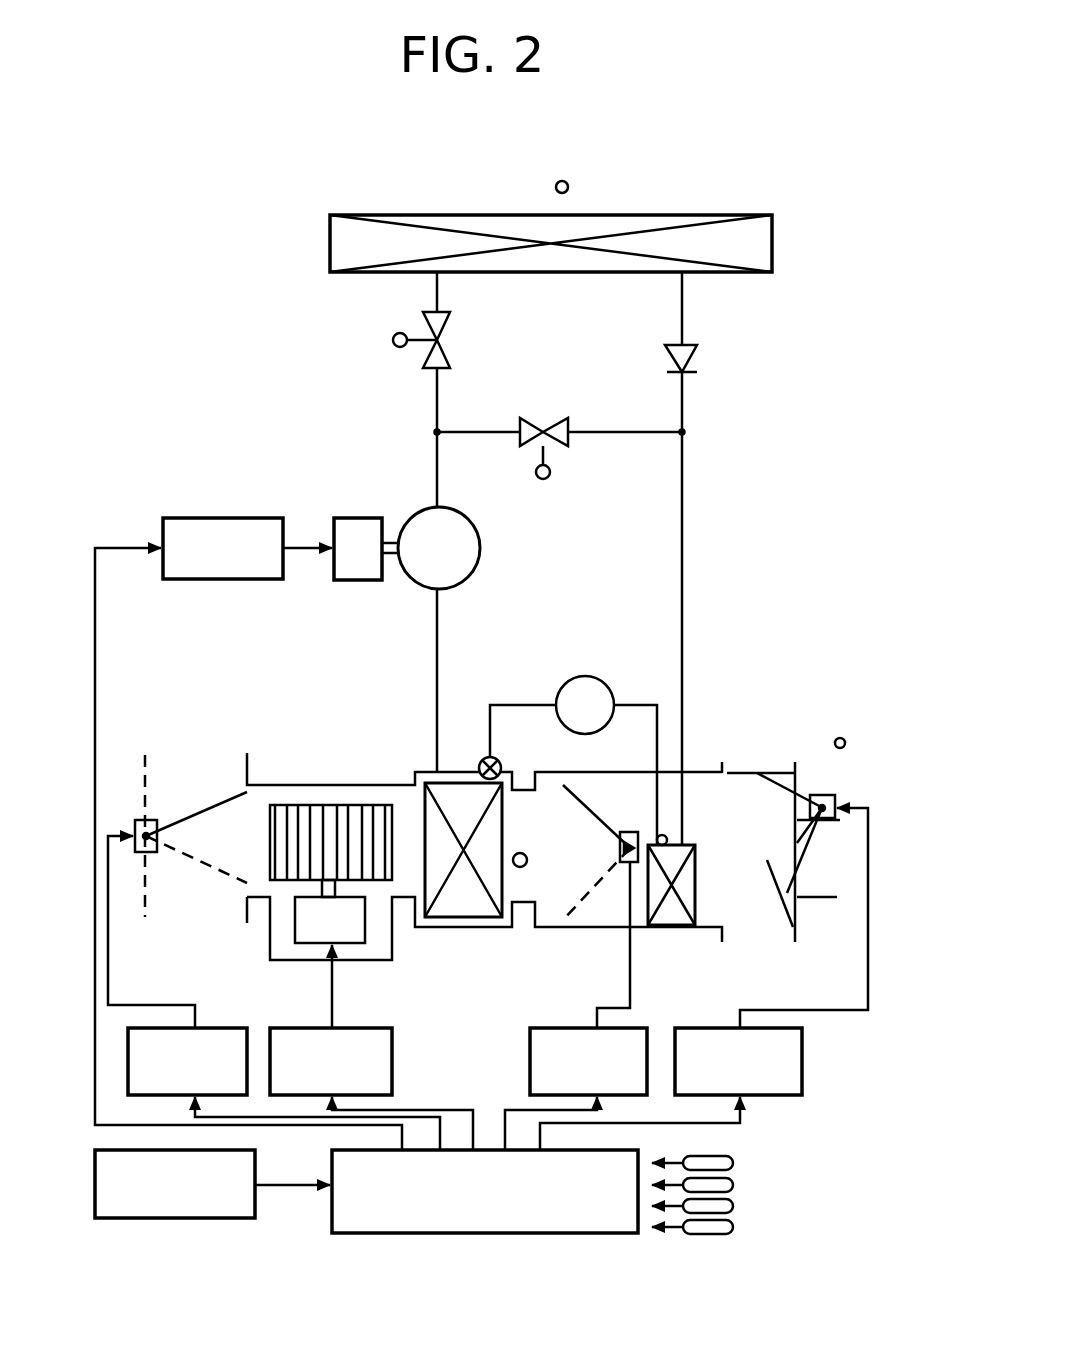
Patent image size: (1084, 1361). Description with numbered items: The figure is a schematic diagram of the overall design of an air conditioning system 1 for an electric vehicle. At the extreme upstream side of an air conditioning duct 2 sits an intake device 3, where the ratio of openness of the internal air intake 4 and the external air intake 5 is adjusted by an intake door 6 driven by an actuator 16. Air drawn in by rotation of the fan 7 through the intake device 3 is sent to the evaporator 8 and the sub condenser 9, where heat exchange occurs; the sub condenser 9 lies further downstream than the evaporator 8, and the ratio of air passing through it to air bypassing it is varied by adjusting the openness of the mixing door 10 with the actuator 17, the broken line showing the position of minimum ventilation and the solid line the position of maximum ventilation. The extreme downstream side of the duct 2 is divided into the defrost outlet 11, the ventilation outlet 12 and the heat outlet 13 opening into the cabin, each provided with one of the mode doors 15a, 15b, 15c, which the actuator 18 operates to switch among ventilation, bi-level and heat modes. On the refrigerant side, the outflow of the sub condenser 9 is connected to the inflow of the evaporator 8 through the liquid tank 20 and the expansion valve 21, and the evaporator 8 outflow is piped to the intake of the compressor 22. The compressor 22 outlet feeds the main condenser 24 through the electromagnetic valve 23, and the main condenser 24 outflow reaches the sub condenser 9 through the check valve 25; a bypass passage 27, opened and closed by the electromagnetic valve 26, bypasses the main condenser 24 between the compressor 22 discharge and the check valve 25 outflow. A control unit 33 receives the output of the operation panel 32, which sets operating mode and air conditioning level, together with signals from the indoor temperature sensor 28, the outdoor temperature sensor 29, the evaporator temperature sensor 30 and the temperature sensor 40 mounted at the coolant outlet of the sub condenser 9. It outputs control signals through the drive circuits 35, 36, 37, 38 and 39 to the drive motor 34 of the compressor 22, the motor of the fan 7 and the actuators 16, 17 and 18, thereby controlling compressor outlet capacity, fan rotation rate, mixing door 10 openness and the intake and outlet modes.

The air conditioning system 1 is at (363, 716).
The air conditioning duct 2 is at (480, 928).
The intake device 3 is at (202, 746).
The internal air intake 4 is at (195, 890).
The external air intake 5 is at (168, 775).
The intake door 6 is at (222, 800).
The fan 7 is at (340, 815).
The evaporator 8 is at (445, 903).
The sub condenser 9 is at (677, 910).
The mixing door 10 is at (598, 815).
The defrost outlet 11 is at (765, 768).
The ventilation outlet 12 is at (847, 860).
The heat outlet 13 is at (747, 927).
The mode door 15a is at (738, 772).
The mode door 15b is at (797, 885).
The mode door 15c is at (793, 925).
The actuator 16 is at (137, 855).
The actuator 17 is at (630, 832).
The actuator 18 is at (823, 797).
The liquid tank 20 is at (585, 676).
The expansion valve 21 is at (489, 757).
The compressor 22 is at (480, 548).
The electromagnetic valve 23 is at (450, 332).
The main condenser 24 is at (648, 215).
The check valve 25 is at (695, 353).
The electromagnetic valve 26 is at (555, 417).
The bypass passage 27 is at (633, 435).
The indoor temperature sensor 28 is at (847, 735).
The outdoor temperature sensor 29 is at (566, 181).
The evaporator temperature sensor 30 is at (520, 868).
The operation panel 32 is at (232, 1218).
The control unit 33 is at (457, 1233).
The drive motor 34 is at (364, 580).
The drive circuit 35 is at (272, 580).
The drive circuit 36 is at (393, 1055).
The drive circuit 37 is at (232, 1023).
The drive circuit 38 is at (647, 1027).
The drive circuit 39 is at (803, 1068).
The temperature sensor 40 is at (662, 835).